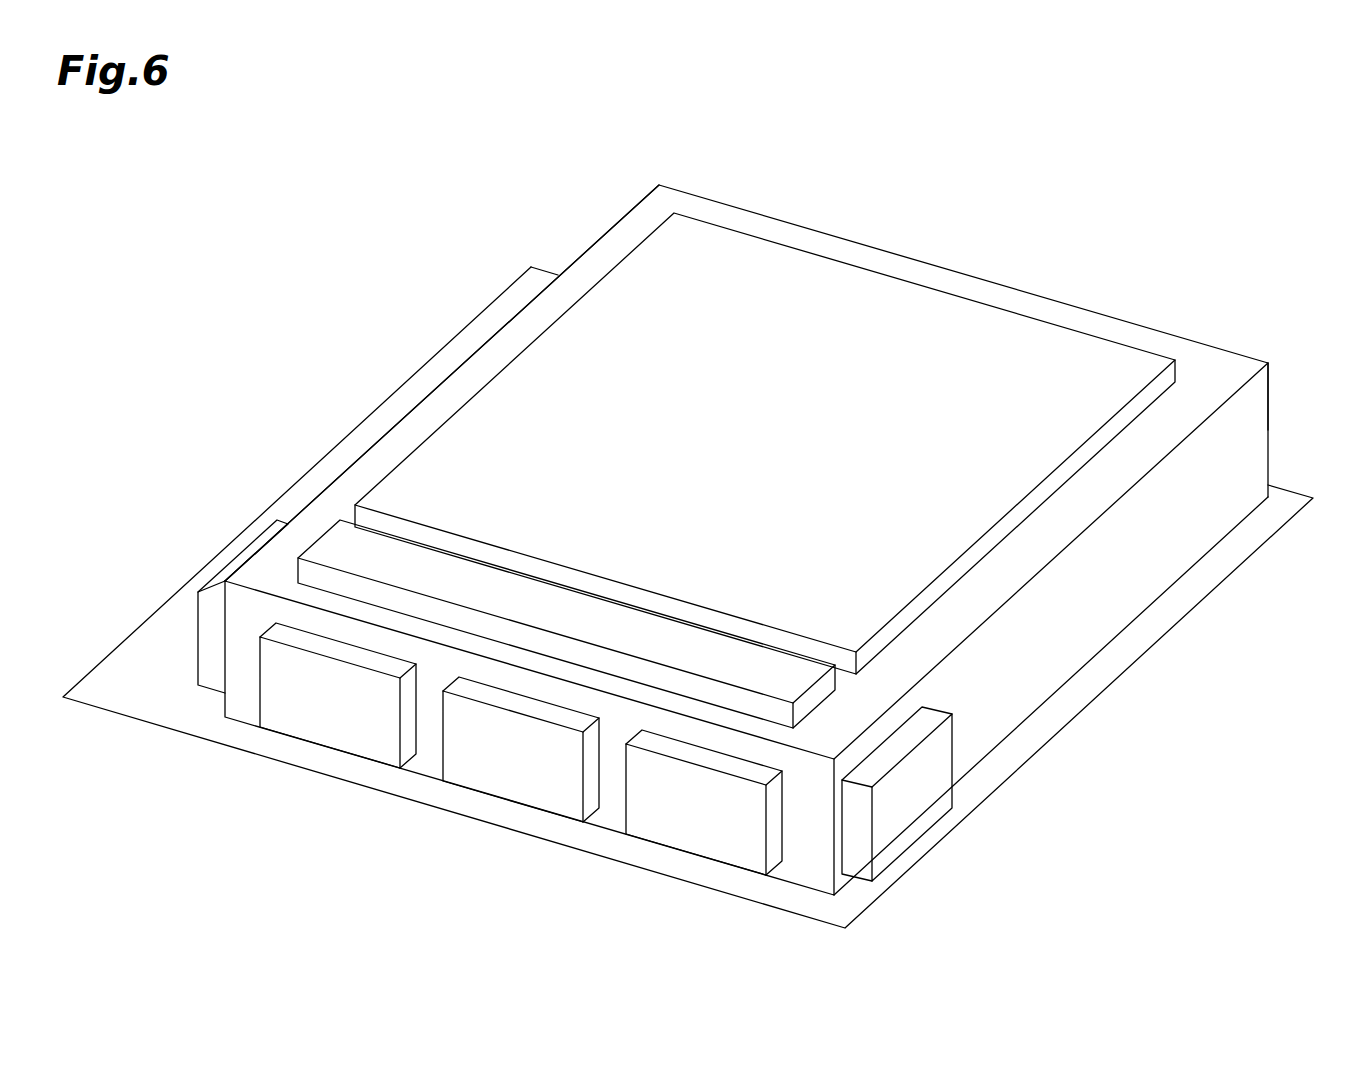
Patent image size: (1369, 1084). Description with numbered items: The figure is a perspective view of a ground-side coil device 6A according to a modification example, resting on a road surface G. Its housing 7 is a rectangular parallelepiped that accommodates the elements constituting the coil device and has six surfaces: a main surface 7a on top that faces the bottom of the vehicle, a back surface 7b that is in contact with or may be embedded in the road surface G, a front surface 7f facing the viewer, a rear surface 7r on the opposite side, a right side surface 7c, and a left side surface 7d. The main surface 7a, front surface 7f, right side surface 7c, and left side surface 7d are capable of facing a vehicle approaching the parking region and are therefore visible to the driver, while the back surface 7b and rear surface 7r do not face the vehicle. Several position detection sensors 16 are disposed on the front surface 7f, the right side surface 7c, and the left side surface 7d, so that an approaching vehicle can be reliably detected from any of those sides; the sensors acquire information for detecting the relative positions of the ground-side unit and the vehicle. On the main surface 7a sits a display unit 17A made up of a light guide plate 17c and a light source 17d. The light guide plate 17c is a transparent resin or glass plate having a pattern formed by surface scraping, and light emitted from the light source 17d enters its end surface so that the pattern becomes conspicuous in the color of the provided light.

The ground-side coil device 6A is at (298, 158).
The housing 7 is at (793, 224).
The main surface 7a is at (430, 425).
The back surface 7b is at (968, 775).
The right side surface 7c is at (1035, 680).
The left side surface 7d is at (224, 634).
The front surface 7f is at (810, 870).
The rear surface 7r is at (1257, 425).
The position detection sensor 16 is at (197, 650).
The display unit 17A is at (682, 436).
The light guide plate 17c is at (815, 338).
The light source 17d is at (340, 545).
The road surface G is at (1287, 500).